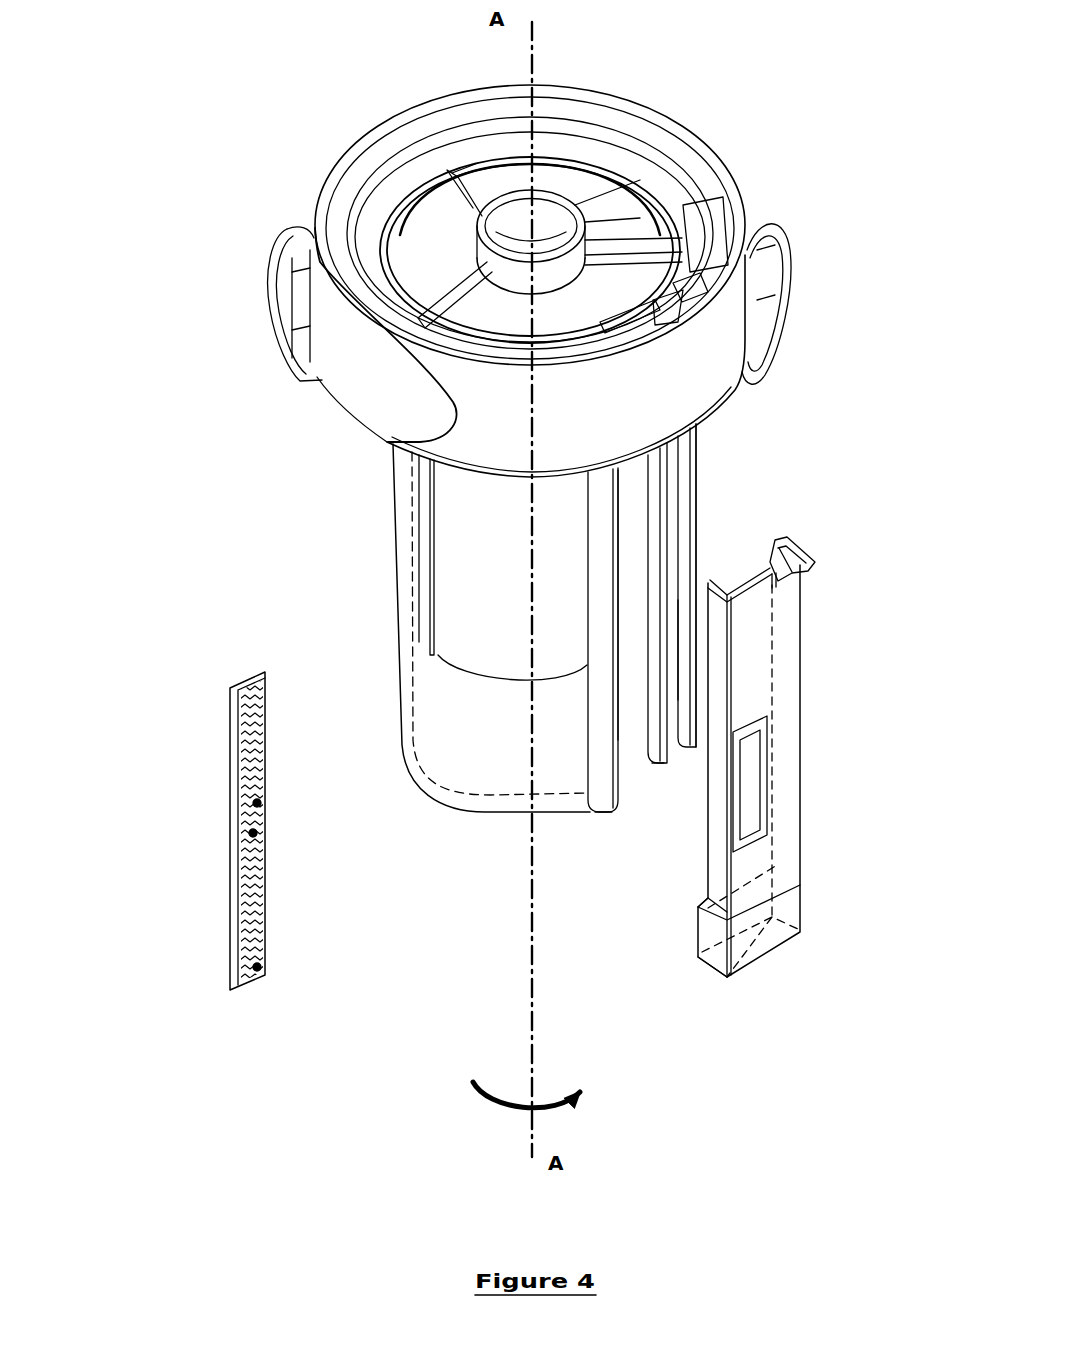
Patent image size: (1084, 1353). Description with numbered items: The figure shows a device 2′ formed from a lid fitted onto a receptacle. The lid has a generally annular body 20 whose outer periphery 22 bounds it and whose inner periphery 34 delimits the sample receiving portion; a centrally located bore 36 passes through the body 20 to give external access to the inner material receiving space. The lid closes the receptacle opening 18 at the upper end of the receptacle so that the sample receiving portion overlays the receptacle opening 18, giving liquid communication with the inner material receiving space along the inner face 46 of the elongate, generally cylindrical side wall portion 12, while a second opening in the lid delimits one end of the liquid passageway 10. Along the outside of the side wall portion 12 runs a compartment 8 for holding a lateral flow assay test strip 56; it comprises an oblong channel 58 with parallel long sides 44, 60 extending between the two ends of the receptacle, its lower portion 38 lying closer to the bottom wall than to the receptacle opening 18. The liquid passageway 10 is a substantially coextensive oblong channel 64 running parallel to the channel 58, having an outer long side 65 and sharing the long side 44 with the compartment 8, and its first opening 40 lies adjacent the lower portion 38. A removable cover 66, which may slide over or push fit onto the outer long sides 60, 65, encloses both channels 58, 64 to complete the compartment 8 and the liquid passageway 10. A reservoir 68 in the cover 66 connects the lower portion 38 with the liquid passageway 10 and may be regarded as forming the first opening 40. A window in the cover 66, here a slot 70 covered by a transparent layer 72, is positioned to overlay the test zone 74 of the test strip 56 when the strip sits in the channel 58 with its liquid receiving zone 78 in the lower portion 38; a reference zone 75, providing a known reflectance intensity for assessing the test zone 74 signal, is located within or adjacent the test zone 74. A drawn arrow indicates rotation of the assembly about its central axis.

The body 20 is at (620, 422).
The bore 36 is at (462, 245).
The inner periphery 34 is at (593, 163).
The receptacle opening 18 is at (640, 220).
The outer periphery 22 is at (388, 440).
The outer long side 65 is at (697, 470).
The side wall portion 12 is at (394, 575).
The inner face 46 is at (422, 510).
The oblong channel 58 is at (632, 497).
The long side 60 is at (626, 802).
The oblong channel 64 is at (642, 640).
The long side 44 is at (626, 638).
The lower portion 38 is at (632, 740).
The first opening 40 is at (672, 772).
The compartment 8 is at (716, 702).
The cover 66 is at (818, 640).
The liquid passageway 10 is at (707, 490).
The slot 70 is at (770, 760).
The transparent layer 72 is at (748, 803).
The reservoir 68 is at (752, 925).
The lateral flow assay test strip 56 is at (200, 866).
The reference zone 75 is at (258, 803).
The test zone 74 is at (254, 833).
The liquid receiving zone 78 is at (257, 967).
The device 2′ is at (366, 1113).